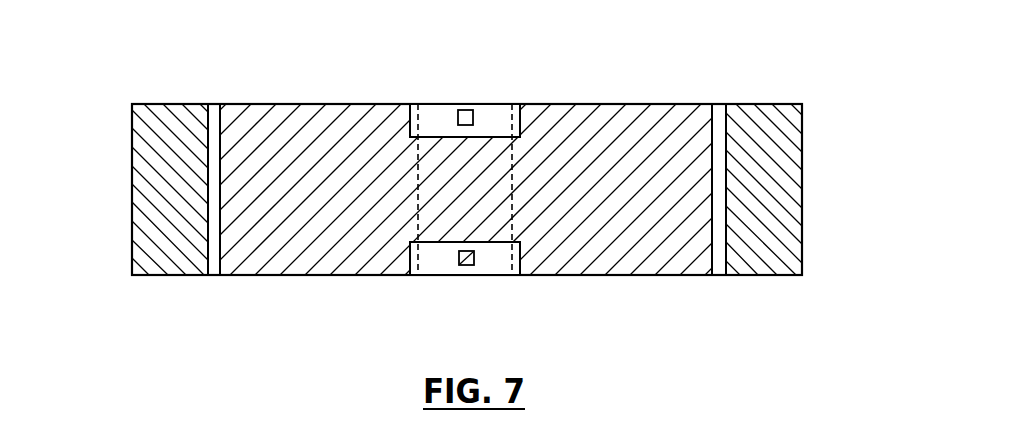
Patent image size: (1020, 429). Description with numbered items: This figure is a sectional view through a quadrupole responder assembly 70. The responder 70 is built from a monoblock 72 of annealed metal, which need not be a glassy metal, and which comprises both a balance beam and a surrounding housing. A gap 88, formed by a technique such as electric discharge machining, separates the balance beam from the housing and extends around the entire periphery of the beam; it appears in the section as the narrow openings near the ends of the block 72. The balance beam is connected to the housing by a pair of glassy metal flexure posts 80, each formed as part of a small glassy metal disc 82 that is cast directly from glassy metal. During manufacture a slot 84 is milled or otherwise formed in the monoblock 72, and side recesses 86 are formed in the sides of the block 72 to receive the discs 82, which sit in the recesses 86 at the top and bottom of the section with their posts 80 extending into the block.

The quadrupole responder assembly 70 is at (112, 106).
The monoblock 72 is at (131, 168).
The glassy metal flexure post 80 is at (466, 110).
The glassy metal disc 82 is at (440, 116).
The slot 84 is at (497, 188).
The side recess 86 is at (521, 115).
The gap 88 is at (213, 118).